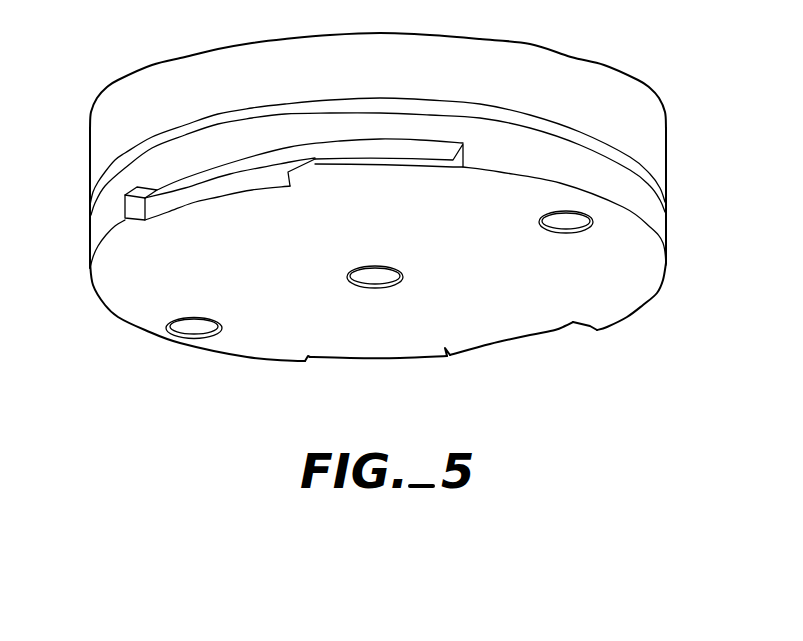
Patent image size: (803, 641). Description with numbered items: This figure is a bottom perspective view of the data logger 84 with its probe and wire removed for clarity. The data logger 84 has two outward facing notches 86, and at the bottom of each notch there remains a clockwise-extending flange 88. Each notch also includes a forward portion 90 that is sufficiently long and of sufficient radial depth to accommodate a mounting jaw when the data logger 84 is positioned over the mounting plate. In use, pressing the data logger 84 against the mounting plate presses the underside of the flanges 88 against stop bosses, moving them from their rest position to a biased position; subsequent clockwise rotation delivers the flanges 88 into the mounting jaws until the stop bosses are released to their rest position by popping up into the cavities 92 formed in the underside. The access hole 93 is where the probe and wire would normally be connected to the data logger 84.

The data logger 84 is at (558, 80).
The outward facing notch 86 is at (250, 192).
The clockwise-extending flange 88 is at (357, 163).
The forward portion 90 is at (98, 277).
The cavity 92 is at (193, 331).
The access hole 93 is at (376, 282).